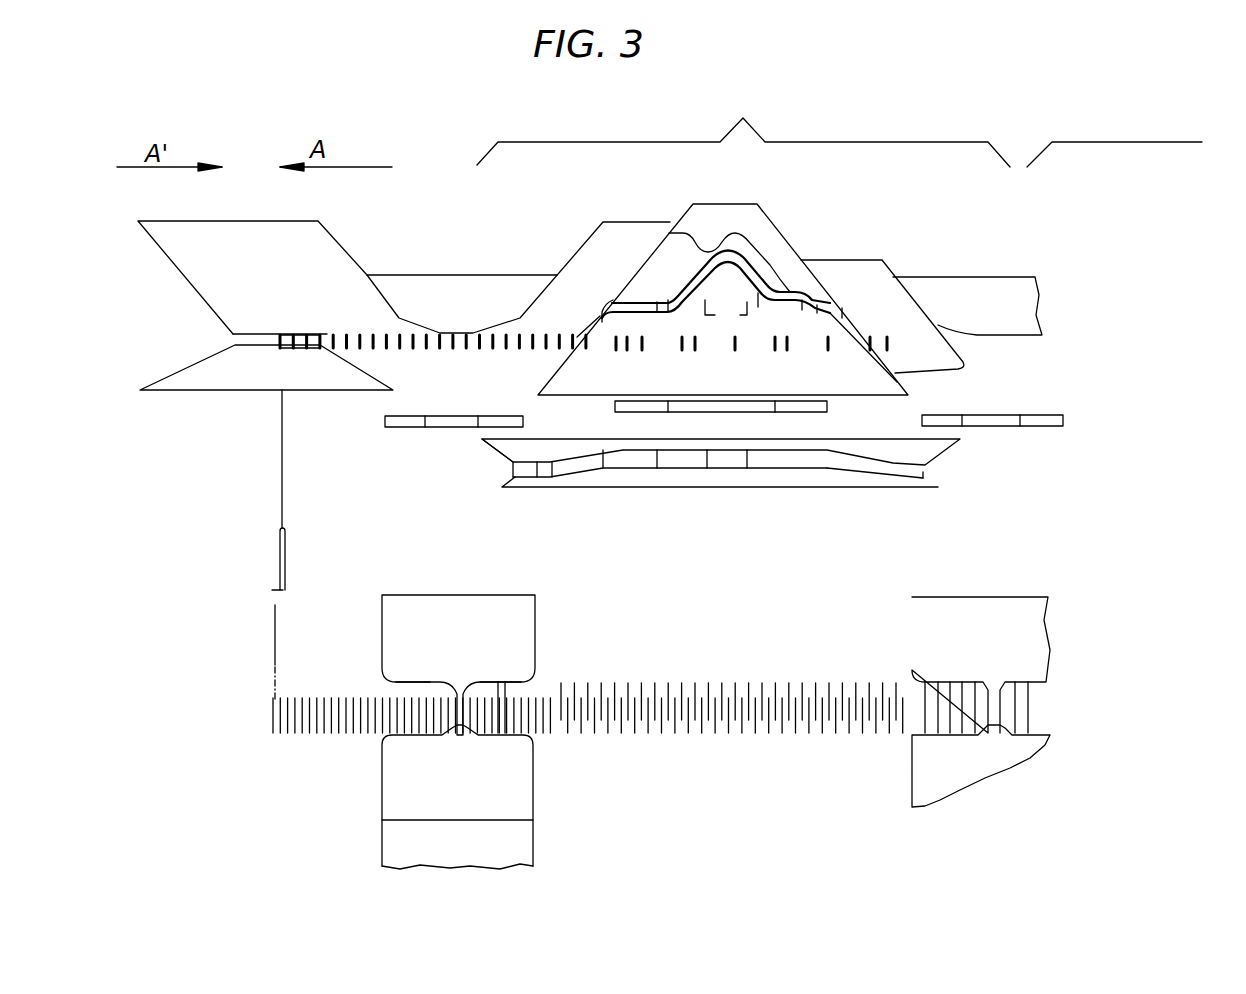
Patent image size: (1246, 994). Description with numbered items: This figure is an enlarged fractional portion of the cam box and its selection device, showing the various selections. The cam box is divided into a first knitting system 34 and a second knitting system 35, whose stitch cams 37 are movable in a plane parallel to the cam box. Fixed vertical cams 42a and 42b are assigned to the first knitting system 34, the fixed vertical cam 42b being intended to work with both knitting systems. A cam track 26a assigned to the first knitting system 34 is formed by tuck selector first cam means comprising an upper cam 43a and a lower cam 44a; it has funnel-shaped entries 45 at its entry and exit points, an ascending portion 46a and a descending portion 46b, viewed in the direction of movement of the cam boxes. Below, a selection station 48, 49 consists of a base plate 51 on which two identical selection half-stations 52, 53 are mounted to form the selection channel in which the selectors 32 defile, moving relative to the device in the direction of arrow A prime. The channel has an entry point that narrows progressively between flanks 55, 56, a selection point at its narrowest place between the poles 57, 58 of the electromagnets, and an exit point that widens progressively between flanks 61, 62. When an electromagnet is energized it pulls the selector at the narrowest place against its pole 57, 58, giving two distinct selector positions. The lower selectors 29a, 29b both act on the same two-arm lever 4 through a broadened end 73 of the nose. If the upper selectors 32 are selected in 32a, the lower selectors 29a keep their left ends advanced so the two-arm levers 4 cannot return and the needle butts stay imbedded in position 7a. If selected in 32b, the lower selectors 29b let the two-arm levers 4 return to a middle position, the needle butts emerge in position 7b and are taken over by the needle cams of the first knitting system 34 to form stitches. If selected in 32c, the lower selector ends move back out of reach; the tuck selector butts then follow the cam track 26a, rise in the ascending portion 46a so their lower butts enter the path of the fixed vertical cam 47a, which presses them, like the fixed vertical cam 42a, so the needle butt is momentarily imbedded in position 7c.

The first knitting system 34 is at (743, 129).
The second knitting system 35 is at (1115, 139).
The stitch cam 37 is at (868, 273).
The needle butt position 7a is at (625, 340).
The needle butt position 7b is at (738, 263).
The needle butt position 7c is at (726, 299).
The fixed vertical cam 42a is at (454, 415).
The fixed vertical cam 42b is at (995, 415).
The fixed vertical cam 47a is at (748, 382).
The upper cam 43a is at (887, 448).
The cam track 26a is at (492, 470).
The funnel-shaped entry 45 is at (513, 470).
The ascending portion 46a is at (592, 468).
The descending portion 46b is at (870, 475).
The lower cam 44a is at (805, 475).
The two-arm lever 4 is at (285, 540).
The broadened end 73 is at (270, 589).
The lower selector 29a is at (278, 622).
The lower selector 29b is at (275, 650).
The pole 57 is at (457, 690).
The selection station 48 is at (484, 673).
The selection half-station 52 is at (515, 605).
The flank 55 is at (395, 682).
The flank 61 is at (527, 682).
The selection station 49 is at (985, 645).
The selector selection position 32a is at (717, 690).
The selector selection position 32b is at (752, 688).
The selector selection position 32c is at (770, 733).
The selector 32 is at (328, 732).
The flank 56 is at (383, 735).
The pole 58 is at (458, 730).
The flank 62 is at (530, 737).
The selection half-station 53 is at (520, 800).
The base plate 51 is at (520, 852).